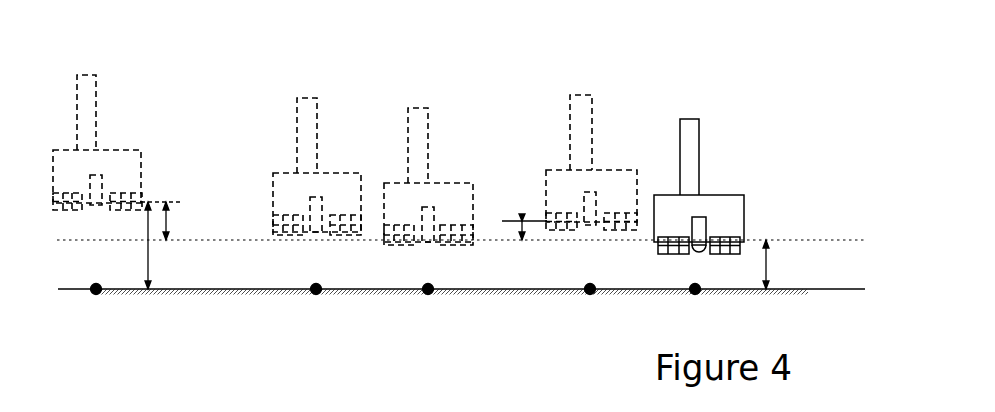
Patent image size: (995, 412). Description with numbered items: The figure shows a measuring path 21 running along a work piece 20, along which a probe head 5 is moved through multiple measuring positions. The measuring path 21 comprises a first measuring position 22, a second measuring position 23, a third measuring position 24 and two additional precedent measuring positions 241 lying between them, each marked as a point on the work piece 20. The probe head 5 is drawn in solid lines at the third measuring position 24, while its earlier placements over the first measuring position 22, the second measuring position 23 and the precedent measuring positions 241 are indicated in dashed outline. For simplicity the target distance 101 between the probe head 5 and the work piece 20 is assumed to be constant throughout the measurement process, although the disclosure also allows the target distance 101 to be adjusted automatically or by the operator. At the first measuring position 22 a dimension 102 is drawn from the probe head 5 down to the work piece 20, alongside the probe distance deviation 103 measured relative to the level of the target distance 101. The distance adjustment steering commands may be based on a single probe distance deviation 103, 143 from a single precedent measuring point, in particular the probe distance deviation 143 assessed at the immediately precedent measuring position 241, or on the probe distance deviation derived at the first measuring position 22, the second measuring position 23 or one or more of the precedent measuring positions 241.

The probe head 5 is at (750, 202).
The work piece 20 is at (455, 322).
The measuring path 21 is at (247, 296).
The first measuring position 22 is at (92, 298).
The second measuring position 23 is at (312, 296).
The third measuring position 24 is at (694, 296).
The precedent measuring position 241 is at (423, 296).
The target distance 101 is at (767, 267).
The second height distance 102 is at (150, 264).
The probe distance deviation 103 is at (166, 223).
The probe distance deviation 143 is at (522, 221).